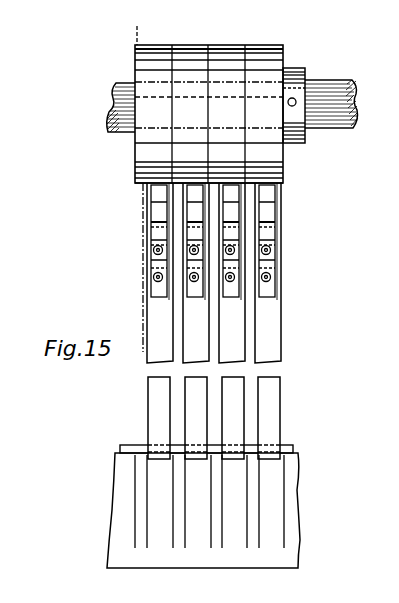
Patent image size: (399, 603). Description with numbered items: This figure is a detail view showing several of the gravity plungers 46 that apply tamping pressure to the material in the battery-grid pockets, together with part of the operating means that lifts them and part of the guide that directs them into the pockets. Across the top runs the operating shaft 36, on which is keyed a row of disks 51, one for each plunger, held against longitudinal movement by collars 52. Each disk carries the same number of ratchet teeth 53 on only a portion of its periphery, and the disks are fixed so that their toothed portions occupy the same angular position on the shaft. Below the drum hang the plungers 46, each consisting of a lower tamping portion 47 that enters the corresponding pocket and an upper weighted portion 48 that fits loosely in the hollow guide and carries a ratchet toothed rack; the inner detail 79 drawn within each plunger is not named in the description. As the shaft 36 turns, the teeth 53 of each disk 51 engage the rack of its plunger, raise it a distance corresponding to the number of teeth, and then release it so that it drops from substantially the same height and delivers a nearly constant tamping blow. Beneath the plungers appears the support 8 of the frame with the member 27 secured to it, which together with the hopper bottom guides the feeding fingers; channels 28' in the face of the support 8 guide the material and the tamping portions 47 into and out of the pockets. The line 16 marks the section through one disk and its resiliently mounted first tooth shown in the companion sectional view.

The section line 16- 16 is at (130, 180).
The disks 51 is at (161, 51).
The collars 52 is at (303, 70).
The operating shaft 36 is at (235, 96).
The ratchet teeth 53 is at (145, 169).
The spring 79 is at (271, 217).
The weighted portion 48 is at (273, 243).
The plungers 46 is at (270, 333).
The lower tamping portion 47 is at (190, 418).
The member 27 is at (185, 438).
The support 8 is at (104, 494).
The channels 28' is at (239, 501).